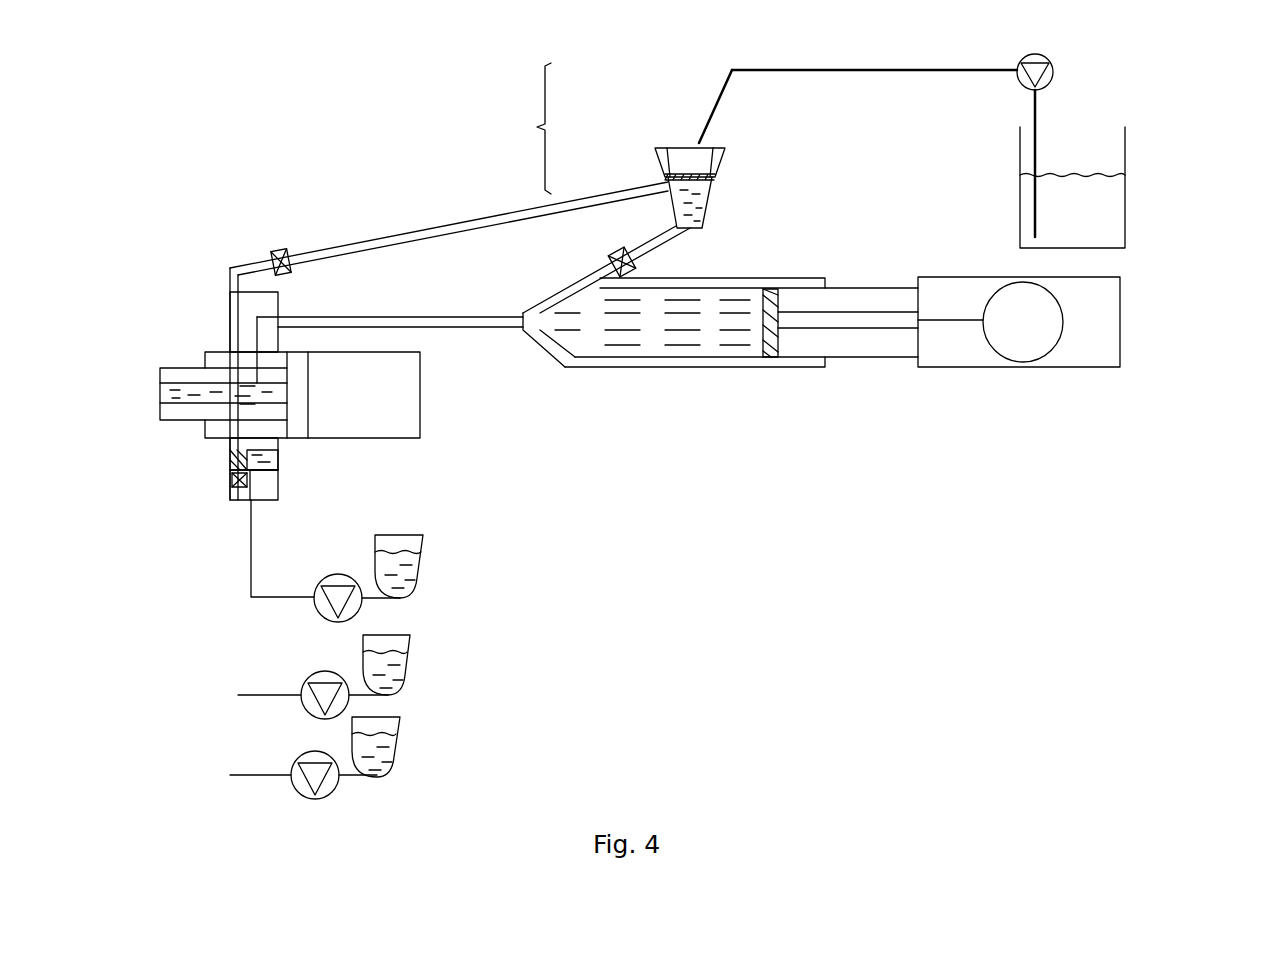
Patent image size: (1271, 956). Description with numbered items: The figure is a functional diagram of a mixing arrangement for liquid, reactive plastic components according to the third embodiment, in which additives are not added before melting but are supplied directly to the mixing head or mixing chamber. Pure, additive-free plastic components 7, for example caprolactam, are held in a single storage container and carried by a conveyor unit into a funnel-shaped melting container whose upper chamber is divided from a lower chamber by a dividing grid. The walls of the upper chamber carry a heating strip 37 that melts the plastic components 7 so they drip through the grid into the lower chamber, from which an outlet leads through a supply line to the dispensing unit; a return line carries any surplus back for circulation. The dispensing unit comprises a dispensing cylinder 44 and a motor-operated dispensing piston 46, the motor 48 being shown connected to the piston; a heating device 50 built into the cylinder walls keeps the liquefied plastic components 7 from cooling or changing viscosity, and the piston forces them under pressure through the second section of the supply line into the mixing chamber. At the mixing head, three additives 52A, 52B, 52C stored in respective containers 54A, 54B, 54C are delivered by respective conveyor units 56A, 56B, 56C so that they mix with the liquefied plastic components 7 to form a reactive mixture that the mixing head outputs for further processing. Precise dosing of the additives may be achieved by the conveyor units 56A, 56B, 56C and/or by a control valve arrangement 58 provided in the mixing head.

The plastic components 7 is at (1110, 207).
The heating strip 37 is at (668, 172).
The dispensing cylinder 44 is at (800, 275).
The dispensing piston 46 is at (766, 368).
The motor 48 is at (1062, 350).
The heating device 50 is at (703, 368).
The additive 52A is at (420, 578).
The additive 52B is at (412, 680).
The additive 52C is at (402, 765).
The container 54A is at (423, 540).
The container 54B is at (412, 640).
The container 54C is at (402, 722).
The conveyor unit 56A is at (322, 612).
The conveyor unit 56B is at (310, 712).
The conveyor unit 56C is at (298, 790).
The control valve arrangement 58 is at (280, 458).